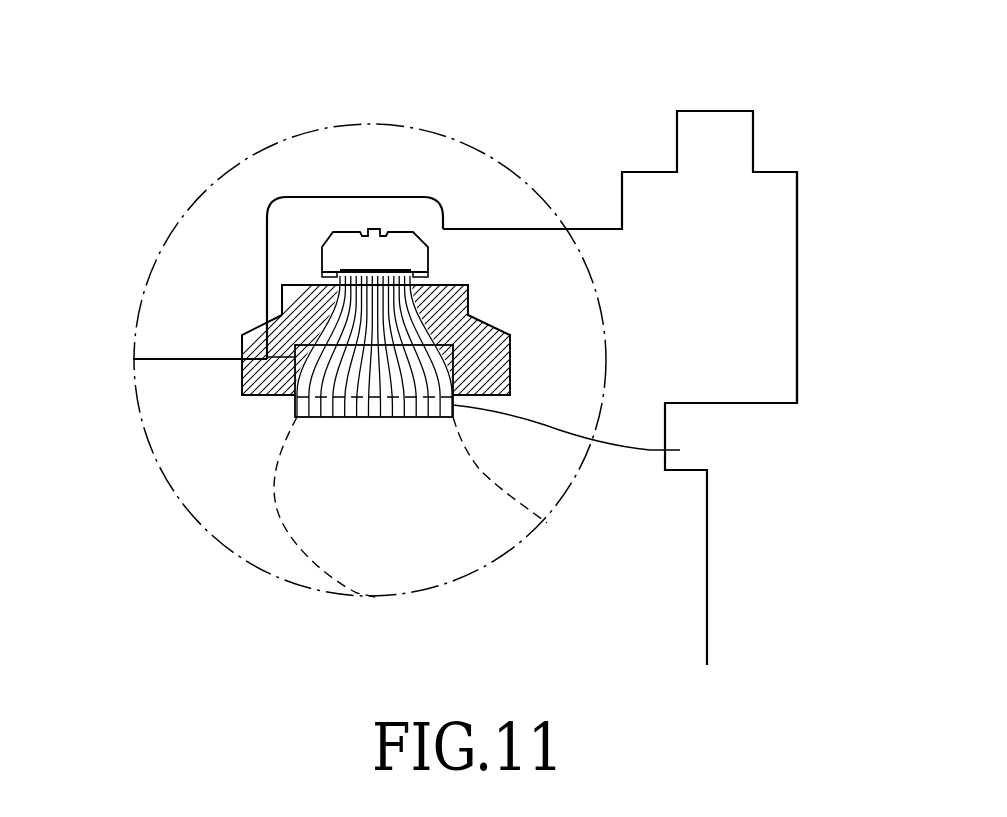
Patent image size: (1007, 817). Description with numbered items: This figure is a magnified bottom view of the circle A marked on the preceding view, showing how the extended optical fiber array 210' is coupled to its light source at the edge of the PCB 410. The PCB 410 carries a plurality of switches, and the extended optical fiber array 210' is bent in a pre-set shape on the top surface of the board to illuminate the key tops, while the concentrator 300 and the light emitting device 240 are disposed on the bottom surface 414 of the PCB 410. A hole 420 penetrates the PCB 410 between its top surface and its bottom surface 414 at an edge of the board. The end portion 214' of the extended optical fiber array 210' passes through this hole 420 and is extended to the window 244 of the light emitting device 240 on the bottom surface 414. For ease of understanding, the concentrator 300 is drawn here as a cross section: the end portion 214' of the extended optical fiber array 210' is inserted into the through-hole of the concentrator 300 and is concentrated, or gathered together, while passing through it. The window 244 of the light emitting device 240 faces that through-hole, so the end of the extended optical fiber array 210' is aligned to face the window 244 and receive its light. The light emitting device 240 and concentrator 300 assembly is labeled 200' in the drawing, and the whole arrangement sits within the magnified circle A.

The circle A is at (270, 147).
The light source module 200' is at (275, 269).
The light emitting device 240 is at (352, 218).
The window 244 is at (381, 272).
The concentrator 300 is at (485, 270).
The end portion 214' is at (240, 387).
The extended optical fiber array 210' is at (302, 507).
The PCB 410 is at (629, 146).
The bottom surface 414 is at (765, 295).
The hole 420 is at (680, 450).